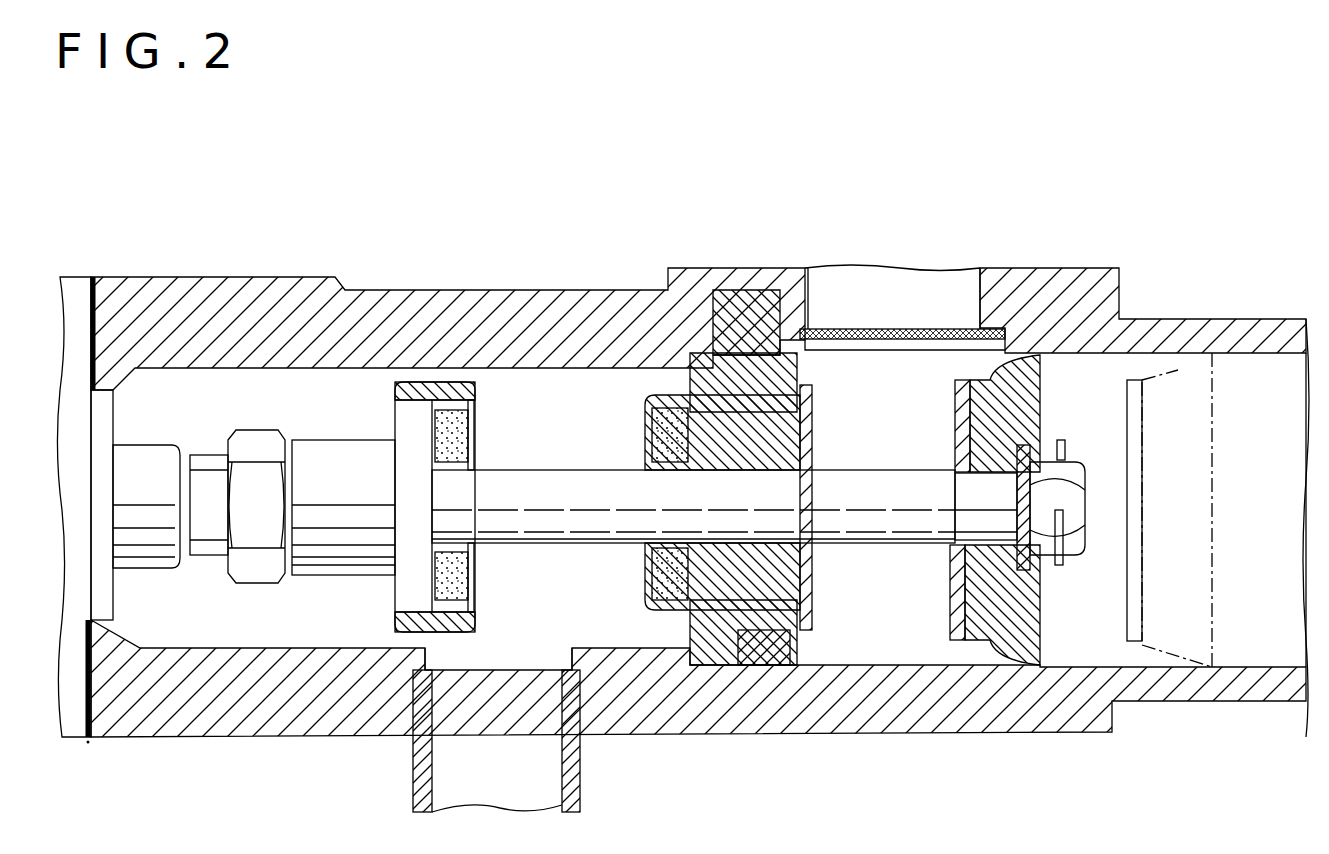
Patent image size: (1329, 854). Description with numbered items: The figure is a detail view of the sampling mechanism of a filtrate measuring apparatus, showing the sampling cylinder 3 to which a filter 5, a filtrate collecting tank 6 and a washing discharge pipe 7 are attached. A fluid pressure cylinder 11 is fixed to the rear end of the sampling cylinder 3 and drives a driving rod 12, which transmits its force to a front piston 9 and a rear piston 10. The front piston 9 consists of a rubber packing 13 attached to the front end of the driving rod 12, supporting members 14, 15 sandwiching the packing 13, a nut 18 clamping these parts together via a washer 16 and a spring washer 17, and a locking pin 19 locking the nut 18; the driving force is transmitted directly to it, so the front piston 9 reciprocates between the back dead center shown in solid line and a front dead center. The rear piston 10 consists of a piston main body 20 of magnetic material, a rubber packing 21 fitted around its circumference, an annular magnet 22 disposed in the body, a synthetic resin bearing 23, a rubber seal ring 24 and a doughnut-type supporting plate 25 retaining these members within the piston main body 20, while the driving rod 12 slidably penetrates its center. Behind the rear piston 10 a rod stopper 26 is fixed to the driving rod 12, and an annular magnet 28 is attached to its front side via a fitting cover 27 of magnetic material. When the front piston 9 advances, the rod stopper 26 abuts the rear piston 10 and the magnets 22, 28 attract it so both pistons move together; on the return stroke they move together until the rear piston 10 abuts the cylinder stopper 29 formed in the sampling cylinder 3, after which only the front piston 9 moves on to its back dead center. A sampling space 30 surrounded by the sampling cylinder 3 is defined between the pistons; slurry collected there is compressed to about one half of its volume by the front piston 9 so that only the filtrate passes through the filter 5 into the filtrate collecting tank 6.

The sampling cylinder 3 is at (167, 710).
The filter 5 is at (870, 329).
The filtrate collecting tank 6 is at (1055, 268).
The washing discharge pipe 7 is at (418, 770).
The front piston 9 is at (1060, 380).
The rear piston 10 is at (630, 398).
The fluid pressure cylinder 11 is at (78, 290).
The driving rod 12 is at (528, 495).
The packing 13 is at (960, 410).
The supporting member 14 is at (958, 610).
The supporting member 15 is at (1005, 680).
The washer 16 is at (1032, 438).
The spring washer 17 is at (1070, 475).
The nut 18 is at (1065, 548).
The locking pin 19 is at (1060, 566).
The piston main body 20 is at (705, 355).
The packing 21 is at (805, 360).
The annular magnet 22 is at (658, 435).
The bearing 23 is at (660, 600).
The seal ring 24 is at (790, 600).
The supporting plate 25 is at (812, 445).
The rod stopper 26 is at (405, 483).
The fitting cover 27 is at (435, 395).
The annular magnet 28 is at (455, 578).
The cylinder stopper 29 is at (705, 667).
The sampling space 30 is at (870, 640).